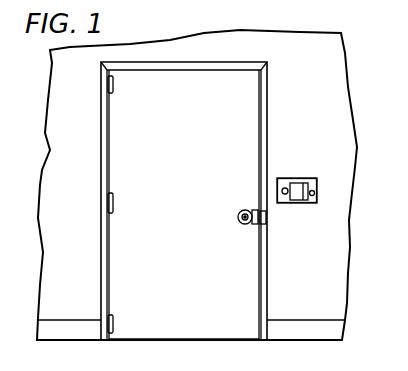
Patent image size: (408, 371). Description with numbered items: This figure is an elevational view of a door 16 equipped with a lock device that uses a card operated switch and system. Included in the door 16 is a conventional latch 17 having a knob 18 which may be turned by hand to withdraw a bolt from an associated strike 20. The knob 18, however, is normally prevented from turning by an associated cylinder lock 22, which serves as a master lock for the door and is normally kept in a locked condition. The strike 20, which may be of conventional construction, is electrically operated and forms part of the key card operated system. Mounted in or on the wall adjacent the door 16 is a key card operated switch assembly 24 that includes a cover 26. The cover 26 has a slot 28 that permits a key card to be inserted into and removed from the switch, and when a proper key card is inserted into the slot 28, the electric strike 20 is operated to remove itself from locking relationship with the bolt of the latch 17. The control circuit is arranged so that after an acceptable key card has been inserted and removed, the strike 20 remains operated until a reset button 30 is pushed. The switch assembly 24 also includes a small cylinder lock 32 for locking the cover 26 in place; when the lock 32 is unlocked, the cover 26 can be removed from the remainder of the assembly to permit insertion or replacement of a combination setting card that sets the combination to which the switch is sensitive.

The door 16 is at (246, 118).
The latch 17 is at (238, 220).
The knob 18 is at (239, 211).
The strike 20 is at (266, 218).
The cylinder lock 22 is at (240, 222).
The key card operated switch assembly 24 is at (296, 178).
The cover 26 is at (308, 203).
The slot 28 is at (308, 190).
The reset button 30 is at (283, 187).
The small cylinder lock 32 is at (314, 192).